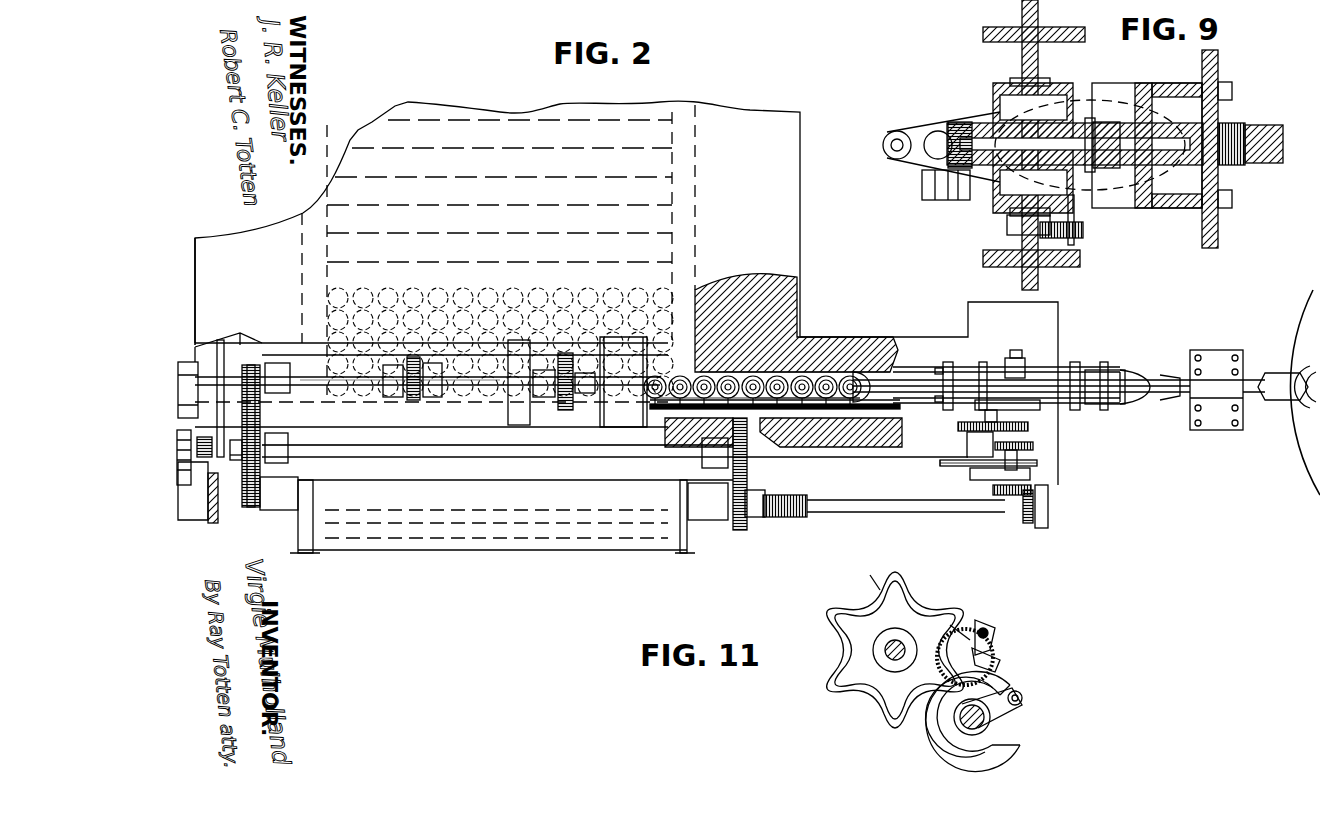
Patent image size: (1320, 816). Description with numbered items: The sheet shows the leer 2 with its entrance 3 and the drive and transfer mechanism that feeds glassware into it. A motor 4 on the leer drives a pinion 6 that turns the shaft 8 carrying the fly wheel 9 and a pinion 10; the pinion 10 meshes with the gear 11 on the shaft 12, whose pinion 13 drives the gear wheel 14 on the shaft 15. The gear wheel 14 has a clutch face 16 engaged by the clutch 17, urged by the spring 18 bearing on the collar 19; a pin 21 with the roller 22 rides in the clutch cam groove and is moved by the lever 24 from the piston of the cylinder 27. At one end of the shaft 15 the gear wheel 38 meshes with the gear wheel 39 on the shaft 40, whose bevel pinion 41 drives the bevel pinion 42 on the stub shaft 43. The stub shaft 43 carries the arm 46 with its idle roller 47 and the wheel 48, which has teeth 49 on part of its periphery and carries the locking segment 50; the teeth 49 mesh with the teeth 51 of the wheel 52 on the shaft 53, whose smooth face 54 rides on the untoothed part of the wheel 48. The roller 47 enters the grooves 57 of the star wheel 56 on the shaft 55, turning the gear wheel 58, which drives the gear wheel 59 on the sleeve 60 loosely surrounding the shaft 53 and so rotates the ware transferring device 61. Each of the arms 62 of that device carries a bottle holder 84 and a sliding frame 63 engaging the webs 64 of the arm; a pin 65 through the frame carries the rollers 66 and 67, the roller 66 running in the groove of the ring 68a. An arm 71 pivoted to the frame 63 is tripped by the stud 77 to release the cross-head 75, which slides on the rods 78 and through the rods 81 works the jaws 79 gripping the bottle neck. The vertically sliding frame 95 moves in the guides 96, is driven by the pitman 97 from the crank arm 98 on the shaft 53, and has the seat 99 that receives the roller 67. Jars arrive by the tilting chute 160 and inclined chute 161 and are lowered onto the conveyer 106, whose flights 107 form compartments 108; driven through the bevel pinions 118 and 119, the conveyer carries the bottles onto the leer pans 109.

In FIG. 2, the leer 2 is at (782, 248).
In FIG. 2, the entrance 3 is at (835, 372).
In FIG. 2, the motor 4 is at (623, 382).
In FIG. 2, the pinion 6 is at (585, 393).
In FIG. 2, the shaft 8 is at (485, 383).
In FIG. 2, the fly wheel 9 is at (519, 394).
In FIG. 2, the pinion 10 is at (412, 400).
In FIG. 2, the gear 11 is at (425, 397).
In FIG. 2, the shaft 12 is at (357, 383).
In FIG. 2, the pinion 13 is at (251, 365).
In FIG. 2, the gear wheel 14 is at (251, 507).
In FIG. 2, the shaft 15 is at (432, 445).
In FIG. 2, the clutch face 16 is at (242, 450).
In FIG. 2, the clutch 17 is at (242, 456).
In FIG. 2, the spring 18 is at (192, 459).
In FIG. 2, the collar 19 is at (205, 437).
In FIG. 2, the pin 21 is at (234, 398).
In FIG. 2, the roller 22 is at (230, 440).
In FIG. 2, the lever 24 is at (238, 332).
In FIG. 2, the cylinder 27 is at (190, 390).
In FIG. 2, the gear wheel 38 is at (747, 440).
In FIG. 2, the gear wheel 39 is at (740, 530).
In FIG. 2, the shaft 40 is at (870, 510).
In FIG. 2, the bevel pinion 41 is at (1028, 523).
In FIG. 2, the bevel pinion 42 is at (1000, 495).
In FIG. 11, the stub shaft 43 is at (985, 725).
In FIG. 2, the arm 46 is at (1048, 500).
In FIG. 11, the arm 46 is at (1020, 700).
In FIG. 11, the idle roller 47 is at (1022, 695).
In FIG. 11, the wheel 48 is at (1005, 755).
In FIG. 2, the teeth 49 is at (1030, 474).
In FIG. 11, the teeth 49 is at (990, 660).
In FIG. 11, the locking segment 50 is at (945, 752).
In FIG. 11, the teeth 51 is at (960, 625).
In FIG. 2, the wheel 52 is at (1037, 463).
In FIG. 11, the wheel 52 is at (990, 633).
In FIG. 11, the shaft 53 is at (985, 630).
In FIG. 11, the smooth face 54 is at (998, 655).
In FIG. 2, the shaft 55 is at (967, 445).
In FIG. 11, the shaft 55 is at (885, 655).
In FIG. 2, the star wheel 56 is at (955, 467).
In FIG. 11, the star wheel 56 is at (848, 612).
In FIG. 2, the grooves 57 is at (565, 410).
In FIG. 11, the grooves 57 is at (870, 575).
In FIG. 2, the gear wheel 58 is at (958, 426).
In FIG. 2, the gear wheel 59 is at (1033, 446).
In FIG. 2, the sleeve 60 is at (987, 413).
In FIG. 2, the ware transferring device 61 is at (992, 355).
In FIG. 9, the shaft 62 is at (1035, 27).
In FIG. 9, the sliding frame 63 is at (1050, 83).
In FIG. 9, the webs 64 is at (1022, 78).
In FIG. 9, the pin 65 is at (985, 123).
In FIG. 9, the roller 66 is at (960, 122).
In FIG. 2, the roller 67 is at (957, 355).
In FIG. 9, the roller 67 is at (1108, 122).
In FIG. 2, the ring 68a is at (1040, 405).
In FIG. 9, the arm 71 is at (1074, 245).
In FIG. 9, the cross-head 75 is at (920, 128).
In FIG. 9, the stud 77 is at (1083, 230).
In FIG. 2, the rods 78 is at (1110, 370).
In FIG. 9, the rods 78 is at (938, 159).
In FIG. 2, the jaws 79 is at (1140, 405).
In FIG. 2, the rods 81 is at (1080, 362).
In FIG. 9, the rods 81 is at (883, 145).
In FIG. 2, the bottle holder 84 is at (872, 375).
In FIG. 9, the vertically sliding frame 95 is at (1232, 123).
In FIG. 9, the guides 96 is at (1218, 60).
In FIG. 9, the pitman 97 is at (1270, 163).
In FIG. 2, the crank arm 98 is at (1020, 358).
In FIG. 9, the seat 99 is at (1115, 208).
In FIG. 2, the conveyer 106 is at (840, 398).
In FIG. 2, the flights 107 is at (812, 398).
In FIG. 2, the compartments 108 is at (838, 385).
In FIG. 2, the leer pans 109 is at (498, 250).
In FIG. 2, the bevel pinion 118 is at (202, 505).
In FIG. 2, the bevel pinion 119 is at (279, 493).
In FIG. 2, the tilting chute 160 is at (1281, 392).
In FIG. 2, the chute 161 is at (1216, 390).